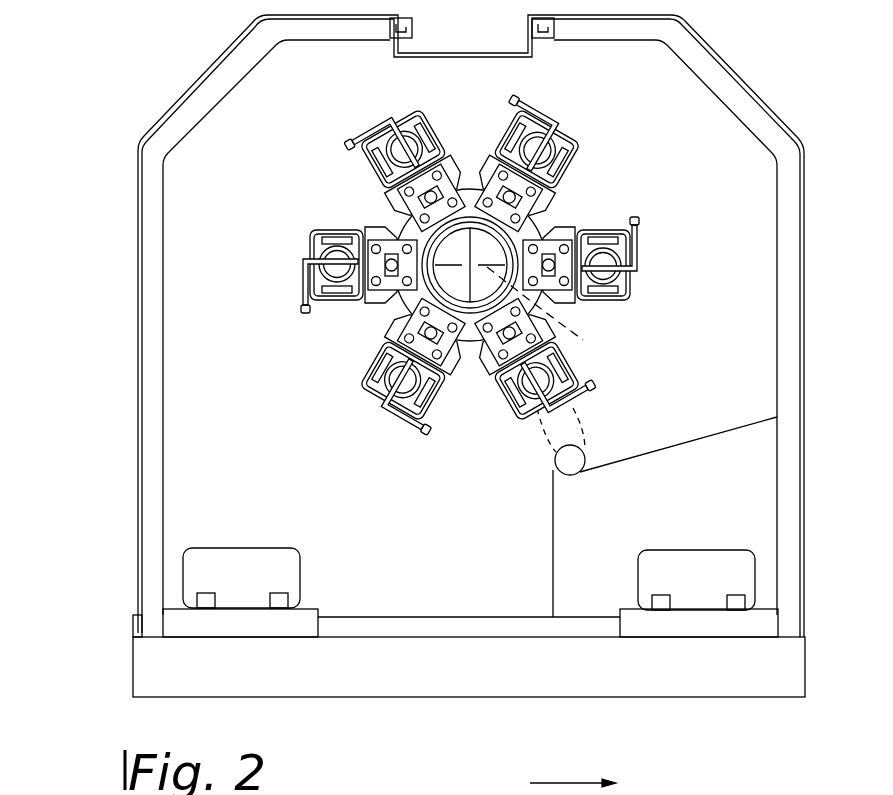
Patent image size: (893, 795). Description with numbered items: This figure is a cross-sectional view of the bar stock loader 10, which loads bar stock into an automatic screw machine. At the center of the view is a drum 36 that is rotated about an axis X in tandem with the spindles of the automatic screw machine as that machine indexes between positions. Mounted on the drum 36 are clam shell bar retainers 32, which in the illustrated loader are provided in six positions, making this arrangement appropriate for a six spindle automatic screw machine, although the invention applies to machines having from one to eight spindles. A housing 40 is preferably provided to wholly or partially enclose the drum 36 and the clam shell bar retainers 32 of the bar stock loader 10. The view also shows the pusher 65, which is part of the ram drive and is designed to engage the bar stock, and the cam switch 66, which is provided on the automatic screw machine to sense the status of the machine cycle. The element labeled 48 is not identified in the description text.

The bar stock loader 10 is at (132, 392).
The housing 40 is at (150, 513).
The clam shell bar retainers 32 is at (500, 132).
The drum 36 is at (543, 240).
The pusher 65 is at (303, 290).
The cam switch 66 is at (688, 470).
The axis X is at (594, 342).
The conveyor direction 48 is at (400, 794).